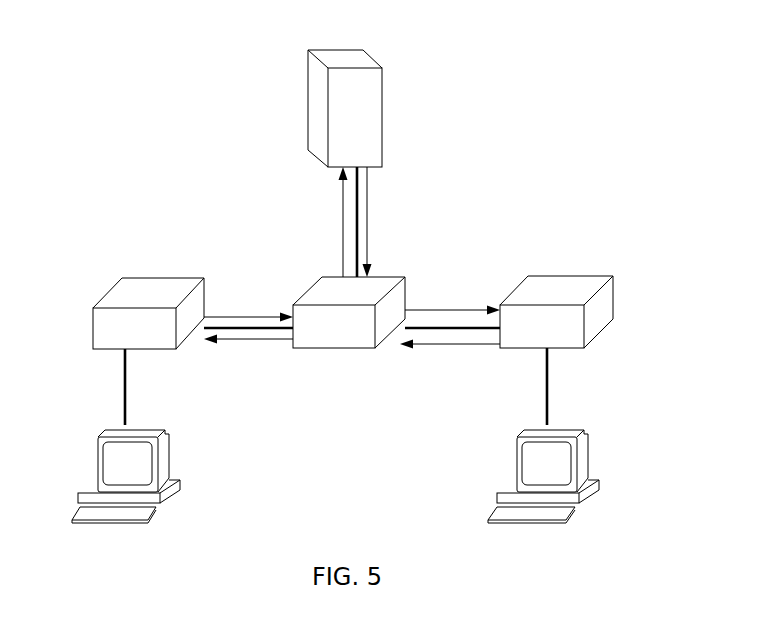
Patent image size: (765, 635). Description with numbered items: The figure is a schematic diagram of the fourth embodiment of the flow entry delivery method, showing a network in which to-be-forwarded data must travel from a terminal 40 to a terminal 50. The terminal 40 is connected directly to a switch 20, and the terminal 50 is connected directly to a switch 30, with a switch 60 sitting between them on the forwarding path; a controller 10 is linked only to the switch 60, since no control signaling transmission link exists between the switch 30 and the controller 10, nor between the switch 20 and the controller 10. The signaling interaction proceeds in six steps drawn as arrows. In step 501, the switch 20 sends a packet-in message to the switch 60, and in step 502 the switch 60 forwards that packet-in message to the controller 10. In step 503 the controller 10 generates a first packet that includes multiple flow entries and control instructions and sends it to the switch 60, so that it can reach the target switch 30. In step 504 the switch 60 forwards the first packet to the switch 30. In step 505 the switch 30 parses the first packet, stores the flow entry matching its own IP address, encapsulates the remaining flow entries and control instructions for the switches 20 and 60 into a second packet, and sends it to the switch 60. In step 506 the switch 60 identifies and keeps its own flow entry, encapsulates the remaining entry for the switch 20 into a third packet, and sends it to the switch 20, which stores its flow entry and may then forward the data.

The controller 10 is at (340, 48).
The switch 20 is at (112, 290).
The switch 30 is at (585, 278).
The terminal 40 is at (102, 435).
The terminal 50 is at (530, 432).
The switch 60 is at (342, 348).
The step of sending packet-in message 501 is at (257, 315).
The step of forwarding packet-in message 502 is at (343, 220).
The step of generating and sending first packet 503 is at (367, 218).
The step of forwarding first packet 504 is at (428, 308).
The step of parsing first packet and sending second packet 505 is at (473, 345).
The step of sending third packet 506 is at (268, 340).